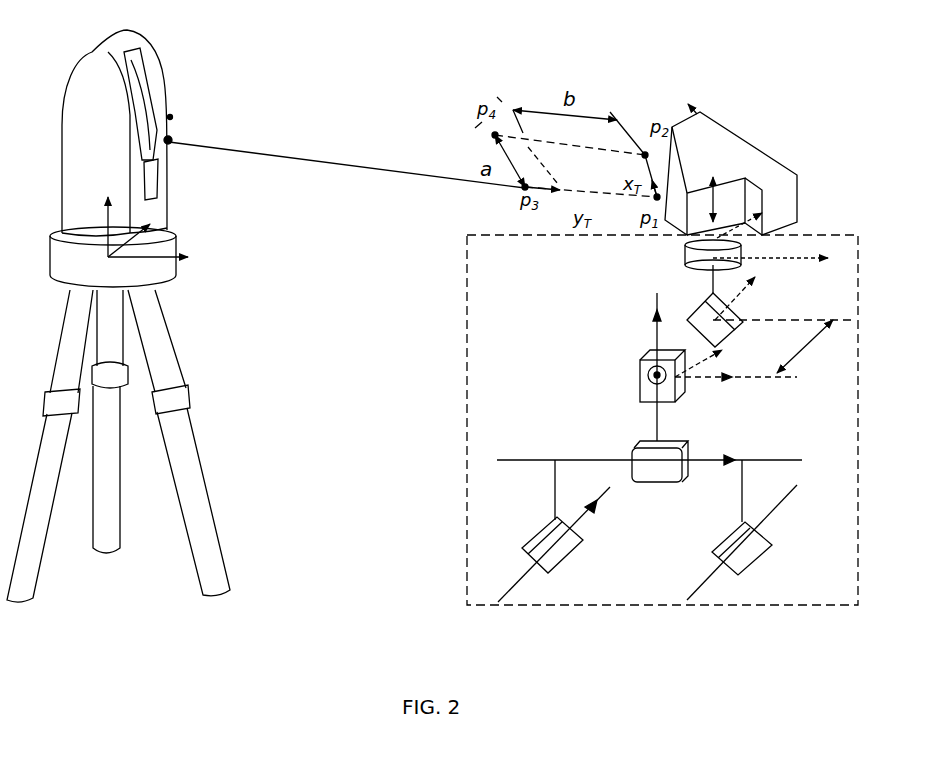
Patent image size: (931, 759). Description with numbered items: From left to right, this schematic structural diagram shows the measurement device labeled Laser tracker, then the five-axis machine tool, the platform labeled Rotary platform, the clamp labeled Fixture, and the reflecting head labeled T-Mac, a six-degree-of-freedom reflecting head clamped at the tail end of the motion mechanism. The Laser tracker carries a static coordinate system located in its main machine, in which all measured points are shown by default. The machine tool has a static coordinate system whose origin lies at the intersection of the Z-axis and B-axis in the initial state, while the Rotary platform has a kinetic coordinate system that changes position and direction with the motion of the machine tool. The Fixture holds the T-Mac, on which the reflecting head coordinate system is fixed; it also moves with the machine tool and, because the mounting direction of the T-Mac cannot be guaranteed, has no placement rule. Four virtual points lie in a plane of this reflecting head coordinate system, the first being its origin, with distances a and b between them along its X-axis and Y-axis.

The laser tracker Laser tracker is at (170, 117).
The six-degree-of-freedom reflecting head T-Mac is at (723, 150).
The fixture Fixture is at (700, 243).
The rotary platform Rotary platform is at (702, 267).